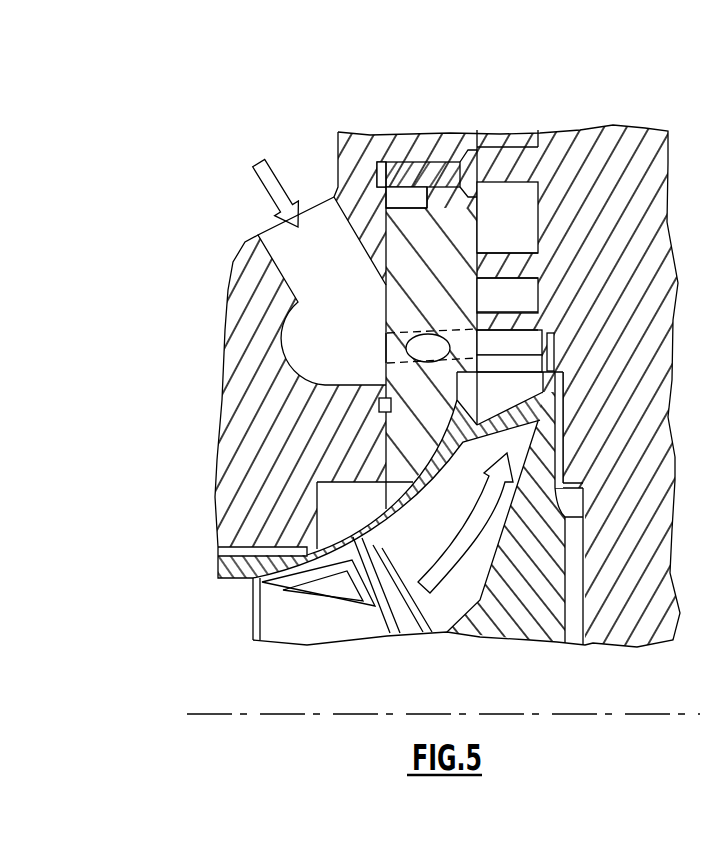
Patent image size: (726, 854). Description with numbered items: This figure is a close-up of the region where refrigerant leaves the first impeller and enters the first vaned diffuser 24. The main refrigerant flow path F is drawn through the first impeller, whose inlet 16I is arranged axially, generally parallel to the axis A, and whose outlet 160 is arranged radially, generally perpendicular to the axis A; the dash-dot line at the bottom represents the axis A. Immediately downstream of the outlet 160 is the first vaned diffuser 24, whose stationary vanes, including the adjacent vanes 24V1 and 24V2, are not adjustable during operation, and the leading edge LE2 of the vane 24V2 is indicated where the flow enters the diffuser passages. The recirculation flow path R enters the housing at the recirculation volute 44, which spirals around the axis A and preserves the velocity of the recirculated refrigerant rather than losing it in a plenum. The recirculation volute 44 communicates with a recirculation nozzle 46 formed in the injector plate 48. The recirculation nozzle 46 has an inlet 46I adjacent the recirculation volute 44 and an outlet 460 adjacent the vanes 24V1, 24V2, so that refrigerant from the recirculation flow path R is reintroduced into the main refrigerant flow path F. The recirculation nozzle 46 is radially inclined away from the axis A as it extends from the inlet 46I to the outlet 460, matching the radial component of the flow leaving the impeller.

The first vaned diffuser 24 is at (520, 145).
The injector plate 48 is at (477, 228).
The vane 24V1 is at (512, 263).
The vane 24V2 is at (512, 320).
The leading edge of vane 24V2 LE2 is at (551, 337).
The outlet of first impeller 160 is at (553, 373).
The recirculation volute 44 is at (328, 330).
The outlet of recirculation nozzle 460 is at (482, 331).
The inlet of recirculation nozzle 46I is at (386, 343).
The recirculation nozzle 46 is at (386, 358).
The inlet of first impeller 16I is at (253, 623).
The main refrigerant flow path F is at (453, 542).
The recirculation flow path R is at (268, 180).
The axis A is at (617, 713).